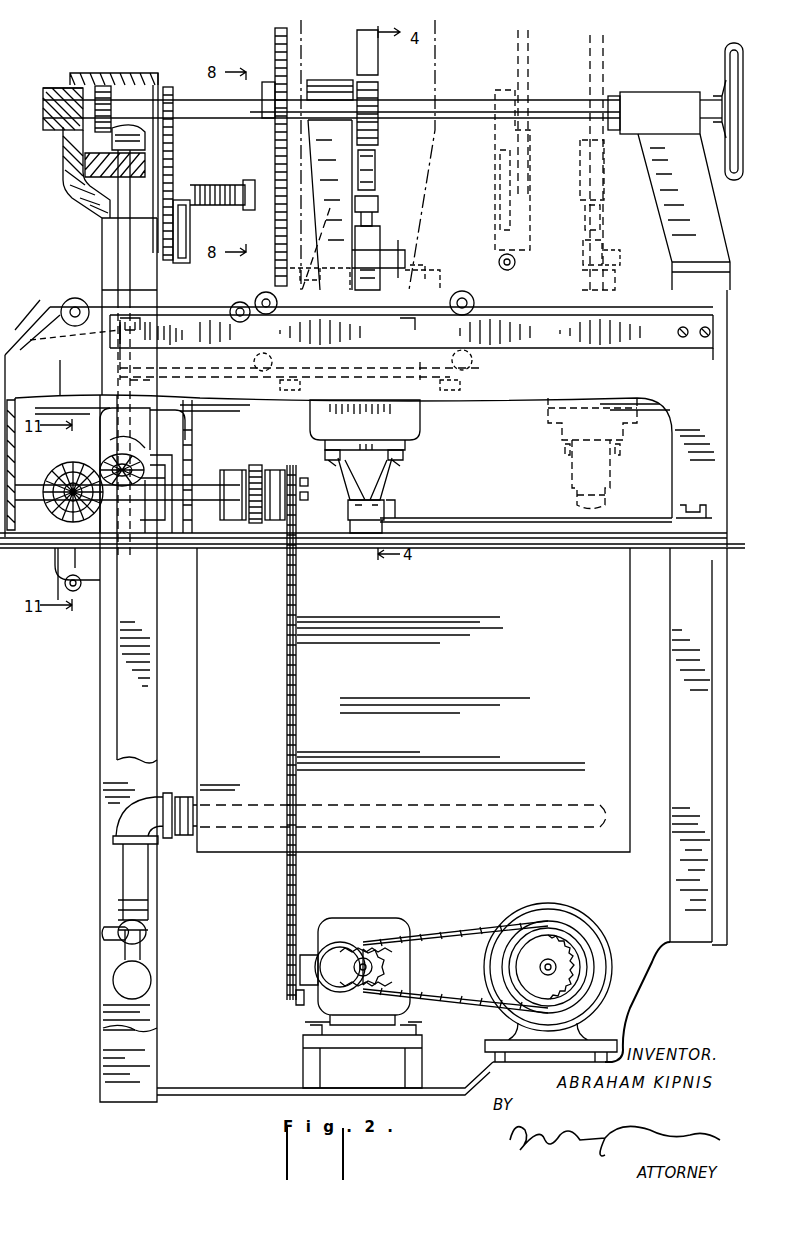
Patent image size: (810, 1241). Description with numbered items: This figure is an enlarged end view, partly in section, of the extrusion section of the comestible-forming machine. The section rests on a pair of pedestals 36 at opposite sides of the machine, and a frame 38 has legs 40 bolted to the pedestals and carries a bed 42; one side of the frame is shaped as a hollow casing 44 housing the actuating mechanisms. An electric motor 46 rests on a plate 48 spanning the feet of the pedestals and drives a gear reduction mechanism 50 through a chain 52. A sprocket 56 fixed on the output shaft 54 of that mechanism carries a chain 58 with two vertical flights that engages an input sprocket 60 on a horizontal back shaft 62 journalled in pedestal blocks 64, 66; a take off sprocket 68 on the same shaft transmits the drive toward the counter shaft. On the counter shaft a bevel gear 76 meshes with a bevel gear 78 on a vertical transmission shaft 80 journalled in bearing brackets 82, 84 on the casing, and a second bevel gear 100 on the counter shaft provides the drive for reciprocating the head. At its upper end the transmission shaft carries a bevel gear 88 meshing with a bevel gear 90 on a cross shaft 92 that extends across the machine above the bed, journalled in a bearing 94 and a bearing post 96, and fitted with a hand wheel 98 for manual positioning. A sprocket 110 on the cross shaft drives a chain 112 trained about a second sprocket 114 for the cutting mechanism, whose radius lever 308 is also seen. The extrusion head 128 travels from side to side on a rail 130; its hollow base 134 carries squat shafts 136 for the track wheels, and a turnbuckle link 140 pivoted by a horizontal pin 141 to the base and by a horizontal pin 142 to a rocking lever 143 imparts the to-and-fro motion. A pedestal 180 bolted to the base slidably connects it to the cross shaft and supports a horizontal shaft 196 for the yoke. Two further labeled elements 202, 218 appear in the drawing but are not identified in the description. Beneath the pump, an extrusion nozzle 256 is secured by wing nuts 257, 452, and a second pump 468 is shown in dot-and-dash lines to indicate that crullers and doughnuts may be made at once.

The pedestals 36 is at (105, 697).
The frame 38 is at (574, 453).
The legs 40 is at (722, 478).
The bed 42 is at (543, 350).
The hollow casing 44 is at (45, 328).
The electric motor 46 is at (613, 930).
The plate 48 is at (215, 1086).
The gear reduction mechanism 50 is at (400, 886).
The chain 52 is at (476, 930).
The output shaft 54 is at (310, 950).
The sprocket 56 is at (388, 976).
The chain 58 is at (296, 730).
The input sprocket 60 is at (300, 474).
The back shaft 62 is at (302, 494).
The pedestal block 64 is at (275, 470).
The pedestal block 66 is at (234, 470).
The take off sprocket 68 is at (256, 465).
The bevel gear 76 is at (150, 533).
The bevel gear 78 is at (118, 458).
The vertical transmission shaft 80 is at (145, 408).
The bearing bracket 82 is at (188, 408).
The bearing bracket 84 is at (95, 180).
The bevel gear 88 is at (150, 137).
The bevel gear 90 is at (102, 84).
The cross shaft 92 is at (140, 95).
The bearing 94 is at (58, 86).
The bearing post 96 is at (665, 173).
The hand wheel 98 is at (735, 180).
The second bevel gear 100 is at (55, 512).
The sprocket 110 is at (170, 88).
The chain 112 is at (170, 162).
The second sprocket 114 is at (165, 243).
The extrusion head 128 is at (449, 216).
The rail 130 is at (645, 315).
The hollow base 134 is at (447, 282).
The squat shafts 136 is at (471, 292).
The turnbuckle link 140 is at (237, 302).
The horizontal pin 141 is at (276, 300).
The horizontal pin 142 is at (72, 298).
The rocking lever 143 is at (68, 412).
The pedestal 180 is at (333, 90).
The horizontal shaft 196 is at (345, 200).
The gear 202 is at (276, 36).
The shaft 218 is at (265, 122).
The extrusion nozzle 256 is at (382, 480).
The wing nuts 257 is at (466, 398).
The radius lever 308 is at (196, 412).
The wing nuts 452 is at (404, 456).
The second pump 468 is at (580, 245).